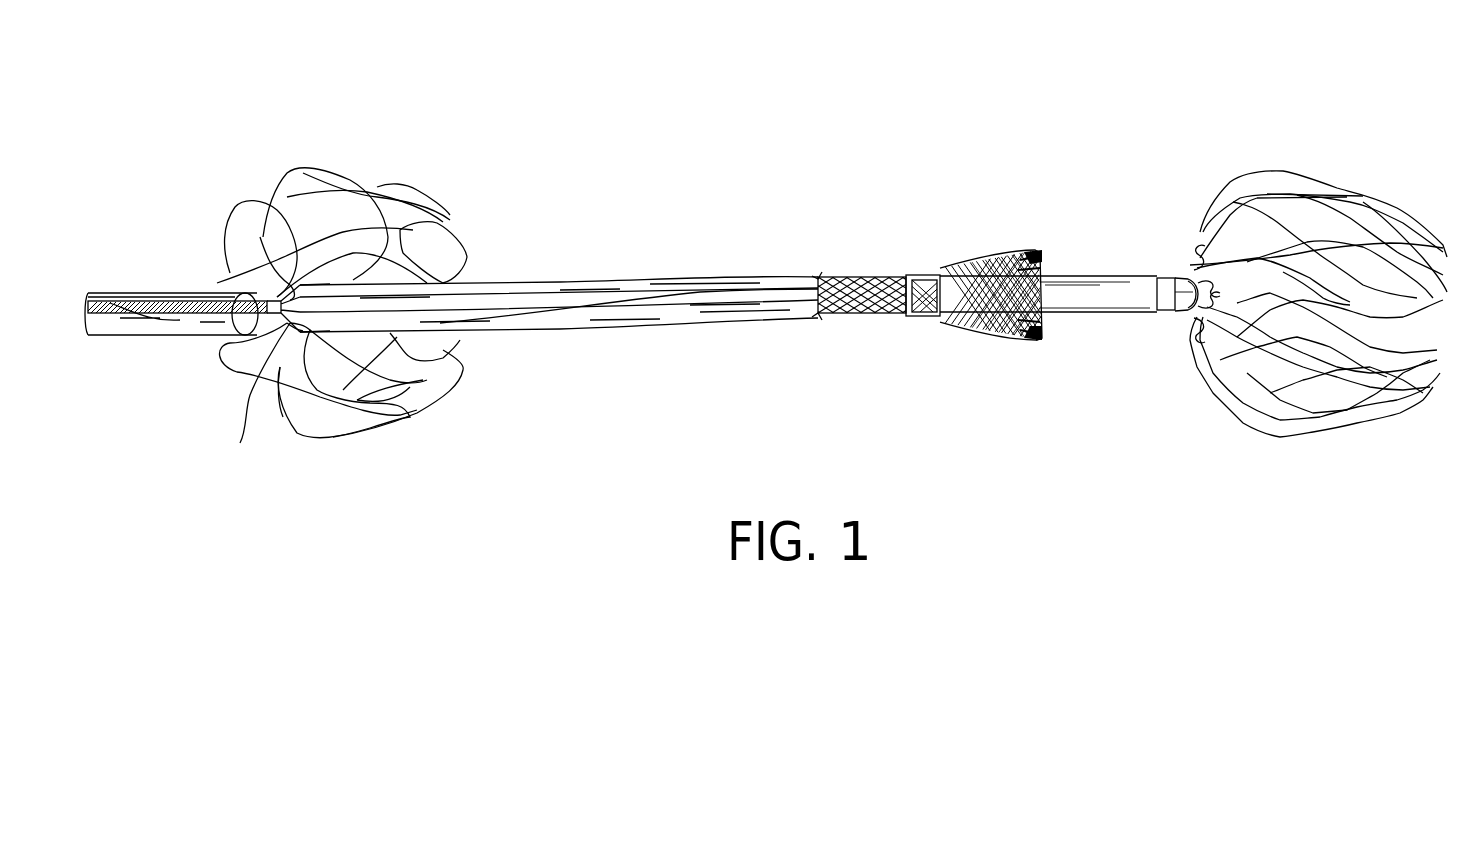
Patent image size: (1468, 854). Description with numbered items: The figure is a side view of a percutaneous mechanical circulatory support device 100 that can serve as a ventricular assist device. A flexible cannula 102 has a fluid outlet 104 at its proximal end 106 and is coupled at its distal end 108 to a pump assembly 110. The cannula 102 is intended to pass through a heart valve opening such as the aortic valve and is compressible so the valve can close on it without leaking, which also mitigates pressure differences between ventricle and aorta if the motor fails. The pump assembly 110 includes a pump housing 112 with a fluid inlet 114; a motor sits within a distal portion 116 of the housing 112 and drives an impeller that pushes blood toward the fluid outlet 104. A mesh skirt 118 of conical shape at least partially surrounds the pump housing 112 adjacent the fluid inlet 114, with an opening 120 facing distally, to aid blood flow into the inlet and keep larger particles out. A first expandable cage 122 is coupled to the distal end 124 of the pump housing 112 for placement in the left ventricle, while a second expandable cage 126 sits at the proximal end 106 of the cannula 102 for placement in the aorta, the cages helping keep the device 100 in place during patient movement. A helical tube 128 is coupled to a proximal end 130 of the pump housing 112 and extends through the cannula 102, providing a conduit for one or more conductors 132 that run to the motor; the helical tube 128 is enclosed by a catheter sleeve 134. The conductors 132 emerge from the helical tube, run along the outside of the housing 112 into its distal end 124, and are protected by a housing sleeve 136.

The circulatory support device 100 is at (218, 70).
The flexible cannula 102 is at (583, 283).
The fluid outlet 104 is at (296, 330).
The proximal end 106 is at (368, 278).
The distal end 108 is at (818, 262).
The pump assembly 110 is at (874, 330).
The pump housing 112 is at (1090, 293).
The fluid inlet 114 is at (928, 272).
The distal portion 116 is at (1136, 268).
The mesh skirt 118 is at (1016, 255).
The opening 120 is at (1043, 333).
The first expandable cage 122 is at (1388, 192).
The distal end 124 is at (1172, 322).
The second expandable cage 126 is at (296, 162).
The helical tube 128 is at (108, 301).
The proximal end 130 is at (815, 332).
The conductors 132 is at (1183, 283).
The catheter sleeve 134 is at (131, 325).
The housing sleeve 136 is at (1058, 275).